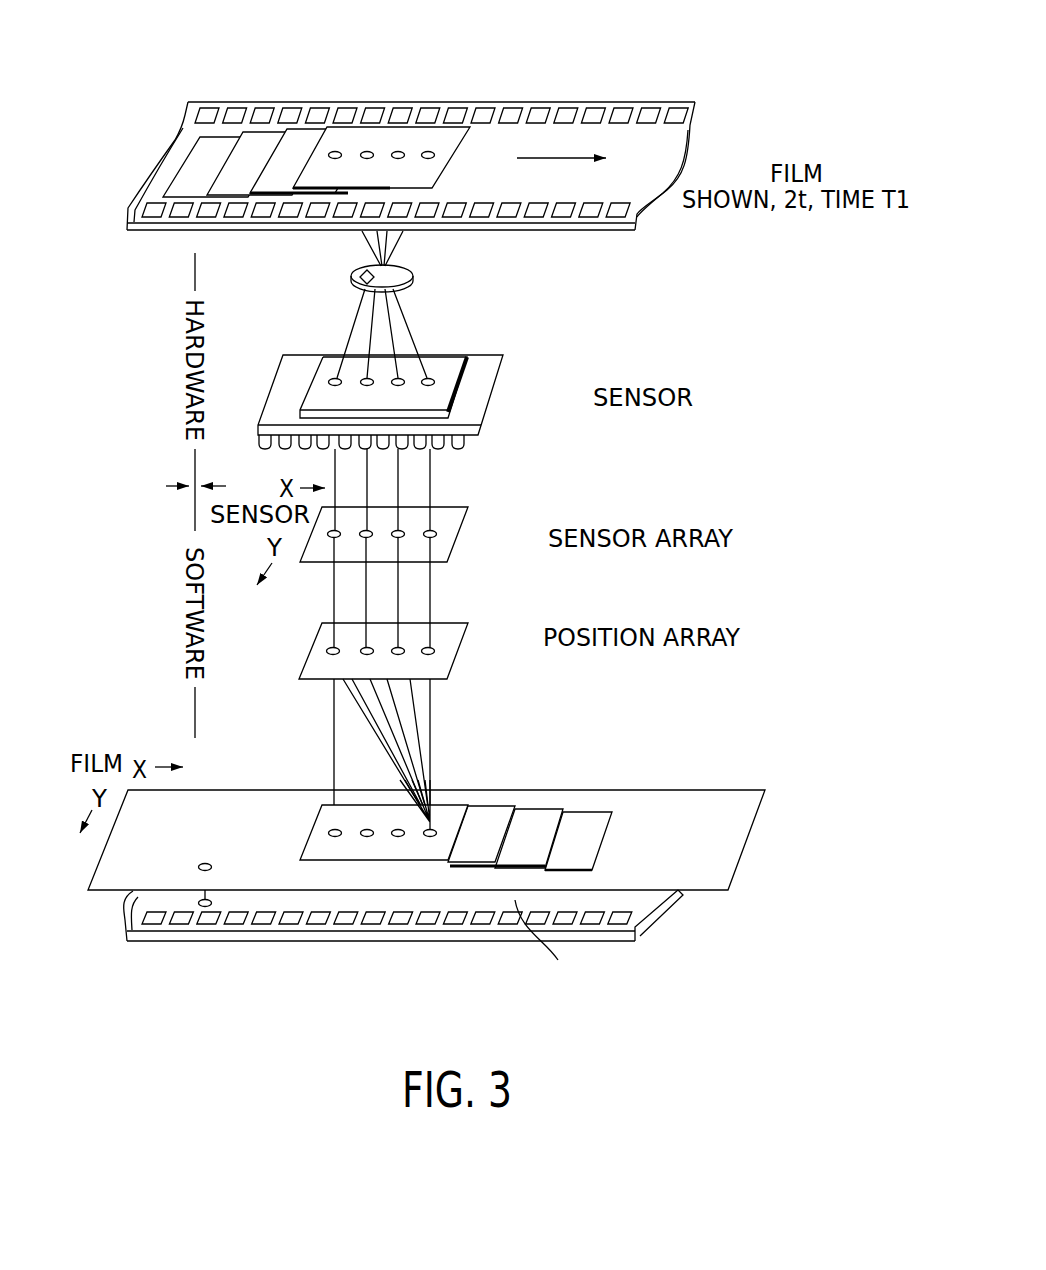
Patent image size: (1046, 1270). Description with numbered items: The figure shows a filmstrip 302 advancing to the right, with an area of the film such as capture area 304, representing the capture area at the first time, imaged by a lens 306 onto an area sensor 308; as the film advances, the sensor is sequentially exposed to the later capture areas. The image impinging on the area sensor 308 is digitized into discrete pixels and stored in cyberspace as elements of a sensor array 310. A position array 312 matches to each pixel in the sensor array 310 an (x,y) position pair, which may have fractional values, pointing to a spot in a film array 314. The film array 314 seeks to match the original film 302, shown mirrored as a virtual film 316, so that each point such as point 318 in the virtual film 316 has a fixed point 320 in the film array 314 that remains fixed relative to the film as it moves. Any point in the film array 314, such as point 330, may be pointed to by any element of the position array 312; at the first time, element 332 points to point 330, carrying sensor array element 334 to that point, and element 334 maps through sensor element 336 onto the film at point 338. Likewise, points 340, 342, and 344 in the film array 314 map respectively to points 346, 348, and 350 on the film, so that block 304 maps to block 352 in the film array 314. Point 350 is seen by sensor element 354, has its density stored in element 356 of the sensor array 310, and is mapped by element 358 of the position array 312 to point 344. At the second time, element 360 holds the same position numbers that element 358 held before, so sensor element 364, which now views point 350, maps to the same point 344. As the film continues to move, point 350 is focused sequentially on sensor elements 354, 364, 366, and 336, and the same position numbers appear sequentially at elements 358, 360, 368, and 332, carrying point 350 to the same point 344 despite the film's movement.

The filmstrip 302 is at (181, 136).
The capture area 304 is at (471, 126).
The lens 306 is at (413, 273).
The area sensor 308 is at (436, 354).
The sensor array 310 is at (469, 511).
The position array 312 is at (469, 624).
The film array 314 is at (761, 802).
The virtual film 316 is at (668, 905).
The point in the virtual film 318 is at (202, 907).
The fixed point 320 is at (204, 862).
The point in the film array 330 is at (335, 836).
The position array element 332 is at (328, 652).
The sensor array element 334 is at (333, 538).
The sensor element 336 is at (328, 382).
The point on the film 338 is at (428, 151).
The point in the film array 340 is at (367, 836).
The point in the film array 342 is at (398, 836).
The point in the film array 344 is at (430, 836).
The point on the film 346 is at (397, 151).
The point on the film 348 is at (365, 151).
The point on the film 350 is at (330, 153).
The block in the film array 352 is at (333, 835).
The sensor element 354 is at (404, 385).
The sensor array element 356 is at (433, 538).
The position array element 358 is at (434, 652).
The position array element 360 is at (400, 654).
The sensor element 364 is at (433, 385).
The sensor element 366 is at (369, 386).
The position array element 368 is at (366, 654).